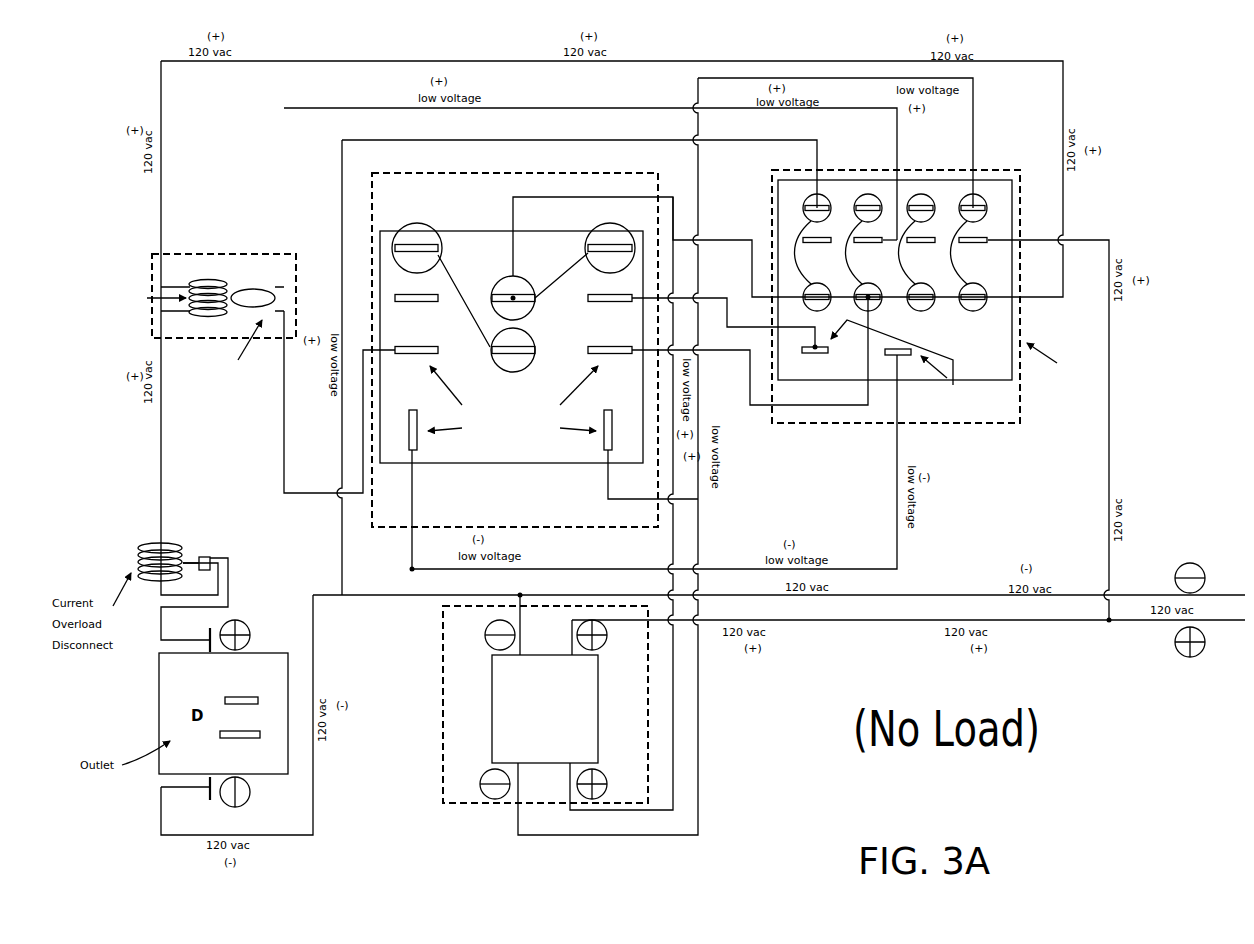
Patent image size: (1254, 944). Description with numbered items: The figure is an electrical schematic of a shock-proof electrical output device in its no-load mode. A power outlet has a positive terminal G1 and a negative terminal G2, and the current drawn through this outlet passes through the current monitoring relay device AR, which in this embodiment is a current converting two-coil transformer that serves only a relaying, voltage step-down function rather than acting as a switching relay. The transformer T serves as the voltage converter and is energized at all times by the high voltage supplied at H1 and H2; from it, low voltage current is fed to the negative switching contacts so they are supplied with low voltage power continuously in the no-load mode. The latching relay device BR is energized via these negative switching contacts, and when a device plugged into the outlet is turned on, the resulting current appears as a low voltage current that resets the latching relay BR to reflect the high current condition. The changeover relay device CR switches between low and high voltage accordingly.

The current monitoring relay device AR is at (146, 266).
The latching relay device BR is at (529, 171).
The changeover relay device CR is at (1024, 223).
The transformer T is at (439, 762).
The positive terminal G1 is at (249, 635).
The negative terminal G2 is at (249, 792).
The high voltage H1 is at (1203, 642).
The high voltage H2 is at (1203, 578).